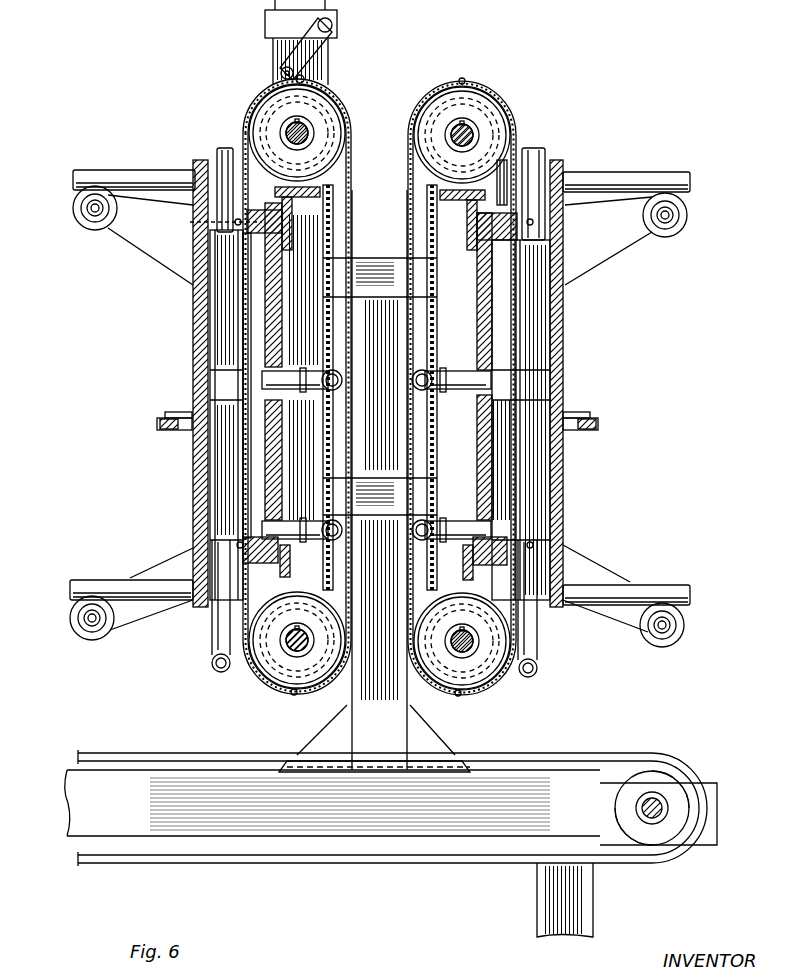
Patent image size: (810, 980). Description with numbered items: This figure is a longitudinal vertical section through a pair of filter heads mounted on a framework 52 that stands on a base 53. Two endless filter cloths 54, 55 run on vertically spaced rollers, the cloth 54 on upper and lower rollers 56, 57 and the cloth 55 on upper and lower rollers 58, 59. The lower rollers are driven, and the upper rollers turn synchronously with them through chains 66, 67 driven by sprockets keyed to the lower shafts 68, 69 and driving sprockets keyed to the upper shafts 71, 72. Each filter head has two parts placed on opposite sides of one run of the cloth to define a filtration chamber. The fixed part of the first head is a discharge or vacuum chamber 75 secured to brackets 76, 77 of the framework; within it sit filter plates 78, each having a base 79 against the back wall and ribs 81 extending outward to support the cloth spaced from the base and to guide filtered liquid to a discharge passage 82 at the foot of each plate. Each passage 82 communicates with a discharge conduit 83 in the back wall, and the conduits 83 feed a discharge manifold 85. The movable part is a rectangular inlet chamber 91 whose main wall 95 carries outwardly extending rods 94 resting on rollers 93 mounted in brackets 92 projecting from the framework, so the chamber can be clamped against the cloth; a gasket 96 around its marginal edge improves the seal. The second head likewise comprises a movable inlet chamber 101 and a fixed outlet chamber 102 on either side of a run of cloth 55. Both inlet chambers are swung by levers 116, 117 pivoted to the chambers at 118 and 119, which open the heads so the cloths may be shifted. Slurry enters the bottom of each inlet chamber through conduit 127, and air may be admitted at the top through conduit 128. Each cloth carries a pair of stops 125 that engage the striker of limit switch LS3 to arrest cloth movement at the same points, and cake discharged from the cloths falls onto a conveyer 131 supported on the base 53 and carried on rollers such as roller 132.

The limit switch LS3 is at (265, 18).
The stops 125 is at (300, 76).
The endless filter cloth 54 is at (350, 190).
The endless filter cloth 55 is at (409, 165).
The upper roller 56 is at (334, 120).
The lower roller 57 is at (258, 672).
The upper roller 58 is at (500, 113).
The lower roller 59 is at (486, 684).
The upper shaft 71 is at (308, 133).
The upper shaft 72 is at (466, 125).
The lower shaft 68 is at (296, 650).
The lower shaft 69 is at (455, 648).
The chain 67 is at (505, 165).
The framework 52 is at (383, 266).
The chain 66 is at (333, 240).
The ribs 81 is at (276, 350).
The base 79 is at (252, 470).
The discharge passage 82 is at (280, 378).
The discharge conduit 83 is at (296, 392).
The discharge manifold 85 is at (415, 392).
The bracket 76 is at (290, 250).
The bracket 77 is at (287, 566).
The inlet chamber 91 is at (225, 395).
The fixed outlet chamber 102 is at (505, 365).
The filter plates 78 is at (250, 285).
The discharge chamber 75 is at (250, 312).
The conduit 128 is at (216, 156).
The main wall 95 is at (194, 365).
The movable inlet chamber 101 is at (563, 392).
The rod 94 is at (126, 170).
The roller 93 is at (72, 212).
The brackets 92 is at (125, 240).
The gasket 96 is at (236, 222).
The lever 116 is at (157, 426).
The pivot 118 is at (165, 415).
The lever 117 is at (598, 426).
The pivot 119 is at (588, 418).
The conduit 127 is at (212, 650).
The conveyer 131 is at (587, 756).
The roller 132 is at (676, 786).
The base 53 is at (488, 840).